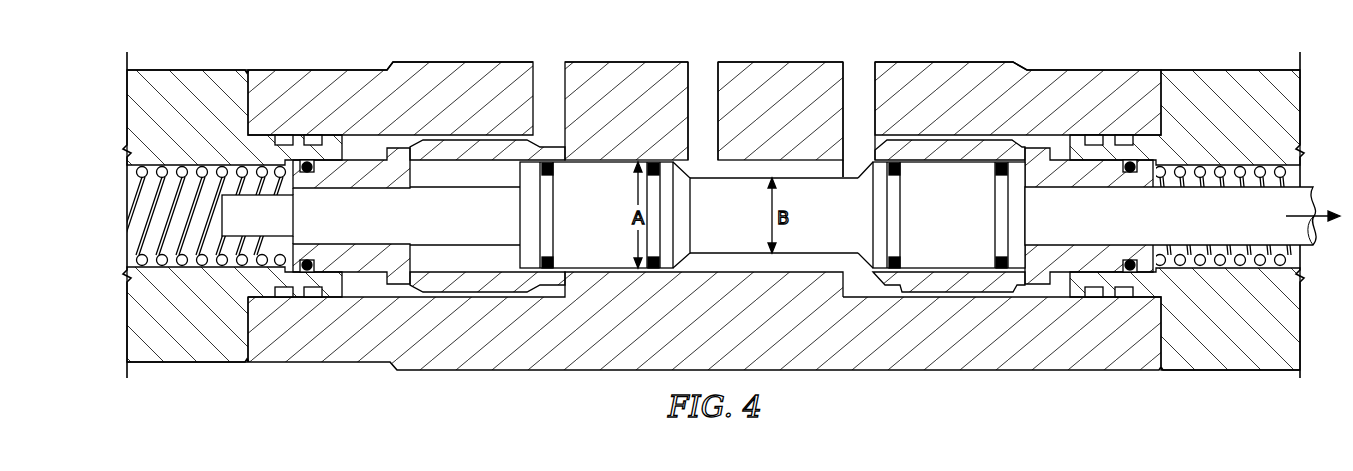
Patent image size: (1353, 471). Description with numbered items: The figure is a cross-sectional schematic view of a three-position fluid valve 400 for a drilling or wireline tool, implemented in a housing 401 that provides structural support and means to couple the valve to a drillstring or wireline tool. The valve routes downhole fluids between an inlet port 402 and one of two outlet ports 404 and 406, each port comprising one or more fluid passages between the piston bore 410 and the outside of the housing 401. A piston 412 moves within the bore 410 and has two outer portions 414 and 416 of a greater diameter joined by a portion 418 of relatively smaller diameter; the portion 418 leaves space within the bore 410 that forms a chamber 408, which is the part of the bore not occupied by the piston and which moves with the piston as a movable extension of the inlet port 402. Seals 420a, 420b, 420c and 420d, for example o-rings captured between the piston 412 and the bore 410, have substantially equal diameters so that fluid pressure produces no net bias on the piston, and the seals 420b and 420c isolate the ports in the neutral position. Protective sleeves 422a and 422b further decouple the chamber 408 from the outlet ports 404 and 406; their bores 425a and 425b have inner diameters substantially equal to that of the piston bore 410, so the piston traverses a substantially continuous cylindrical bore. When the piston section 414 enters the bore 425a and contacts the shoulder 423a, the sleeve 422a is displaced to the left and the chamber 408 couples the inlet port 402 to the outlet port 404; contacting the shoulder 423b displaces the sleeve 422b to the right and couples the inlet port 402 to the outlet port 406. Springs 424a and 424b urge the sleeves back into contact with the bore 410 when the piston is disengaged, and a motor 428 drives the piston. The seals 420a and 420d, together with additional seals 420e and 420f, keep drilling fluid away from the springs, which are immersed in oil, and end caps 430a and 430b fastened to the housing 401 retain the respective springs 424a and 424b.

The fluid valve 400 is at (528, 44).
The housing 401 is at (362, 69).
The inlet port 402 is at (703, 164).
The outlet port 404 is at (562, 146).
The outlet port 406 is at (858, 161).
The chamber 408 is at (772, 172).
The piston bore 410 is at (600, 272).
The piston 412 is at (842, 220).
The outer portion 414 is at (615, 209).
The outer portion 416 is at (965, 201).
The portion 418 is at (797, 246).
The seal 420a is at (547, 176).
The seal 420b is at (653, 176).
The seal 420c is at (893, 257).
The seal 420d is at (1003, 178).
The seal 420e is at (307, 259).
The seal 420f is at (1130, 173).
The protective sleeve 422a is at (408, 298).
The protective sleeve 422b is at (1023, 299).
The shoulder 423a is at (407, 159).
The shoulder 423b is at (1022, 150).
The spring 424a is at (223, 168).
The spring 424b is at (1243, 268).
The bore 425a is at (487, 158).
The bore 425b is at (948, 158).
The motor 428 is at (1292, 218).
The end cap 430a is at (182, 364).
The end cap 430b is at (1290, 371).